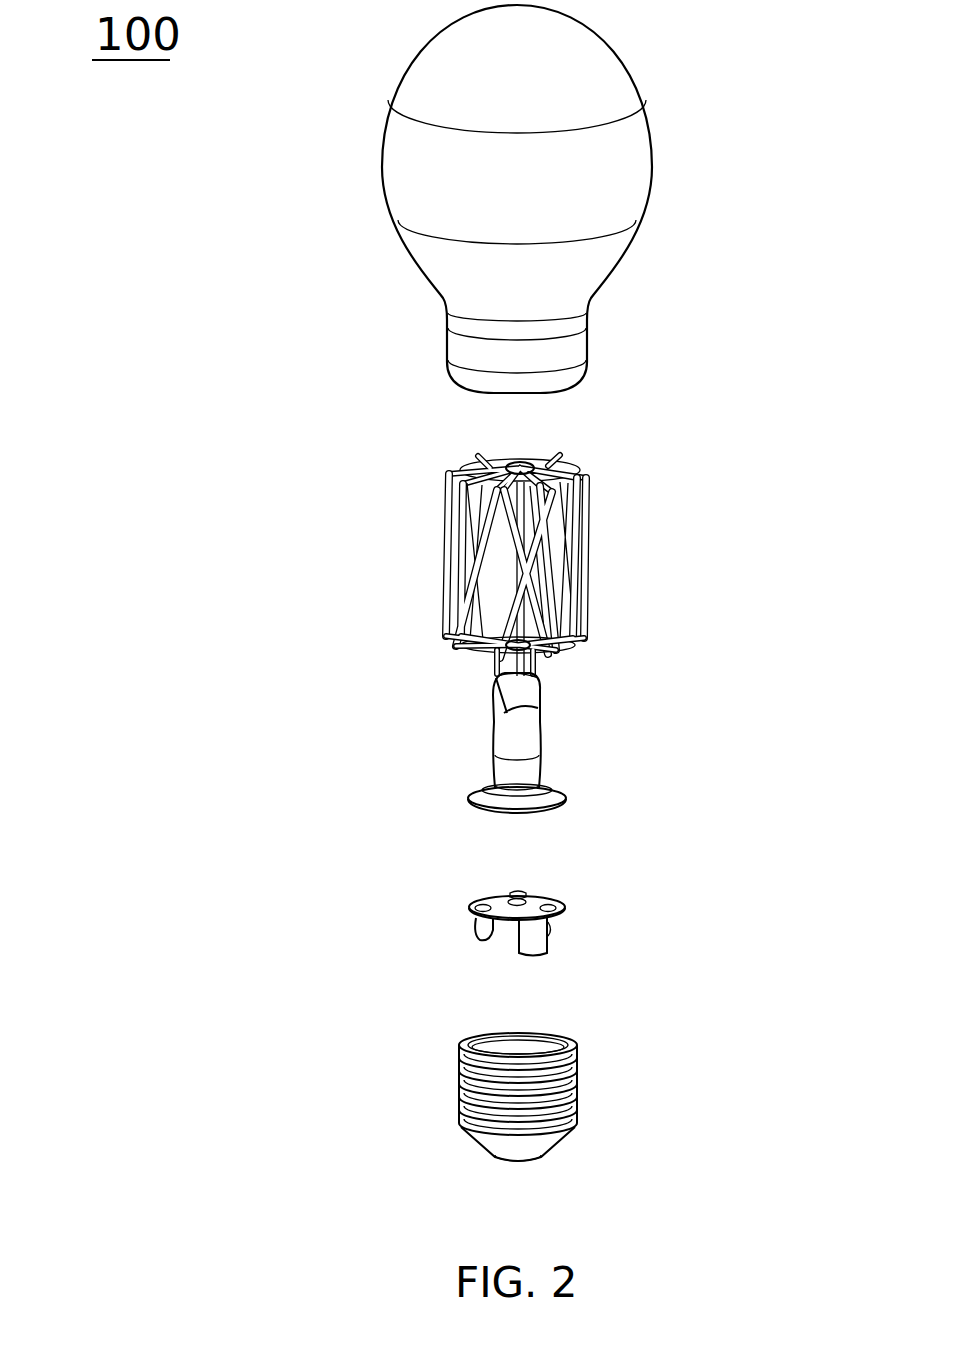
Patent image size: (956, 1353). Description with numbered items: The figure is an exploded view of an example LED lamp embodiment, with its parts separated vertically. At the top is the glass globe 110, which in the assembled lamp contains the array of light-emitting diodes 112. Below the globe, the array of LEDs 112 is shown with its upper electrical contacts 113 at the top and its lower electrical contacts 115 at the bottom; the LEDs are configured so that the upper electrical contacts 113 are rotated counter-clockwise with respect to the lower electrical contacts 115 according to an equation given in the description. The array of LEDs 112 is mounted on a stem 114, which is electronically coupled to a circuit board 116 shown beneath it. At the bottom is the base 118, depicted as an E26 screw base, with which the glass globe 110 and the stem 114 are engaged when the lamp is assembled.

The glass globe 110 is at (452, 193).
The array of light-emitting diodes 112 is at (441, 561).
The upper electrical contacts 113 is at (450, 467).
The stem 114 is at (507, 770).
The lower electrical contacts 115 is at (462, 653).
The circuit board 116 is at (498, 902).
The base 118 is at (507, 1148).